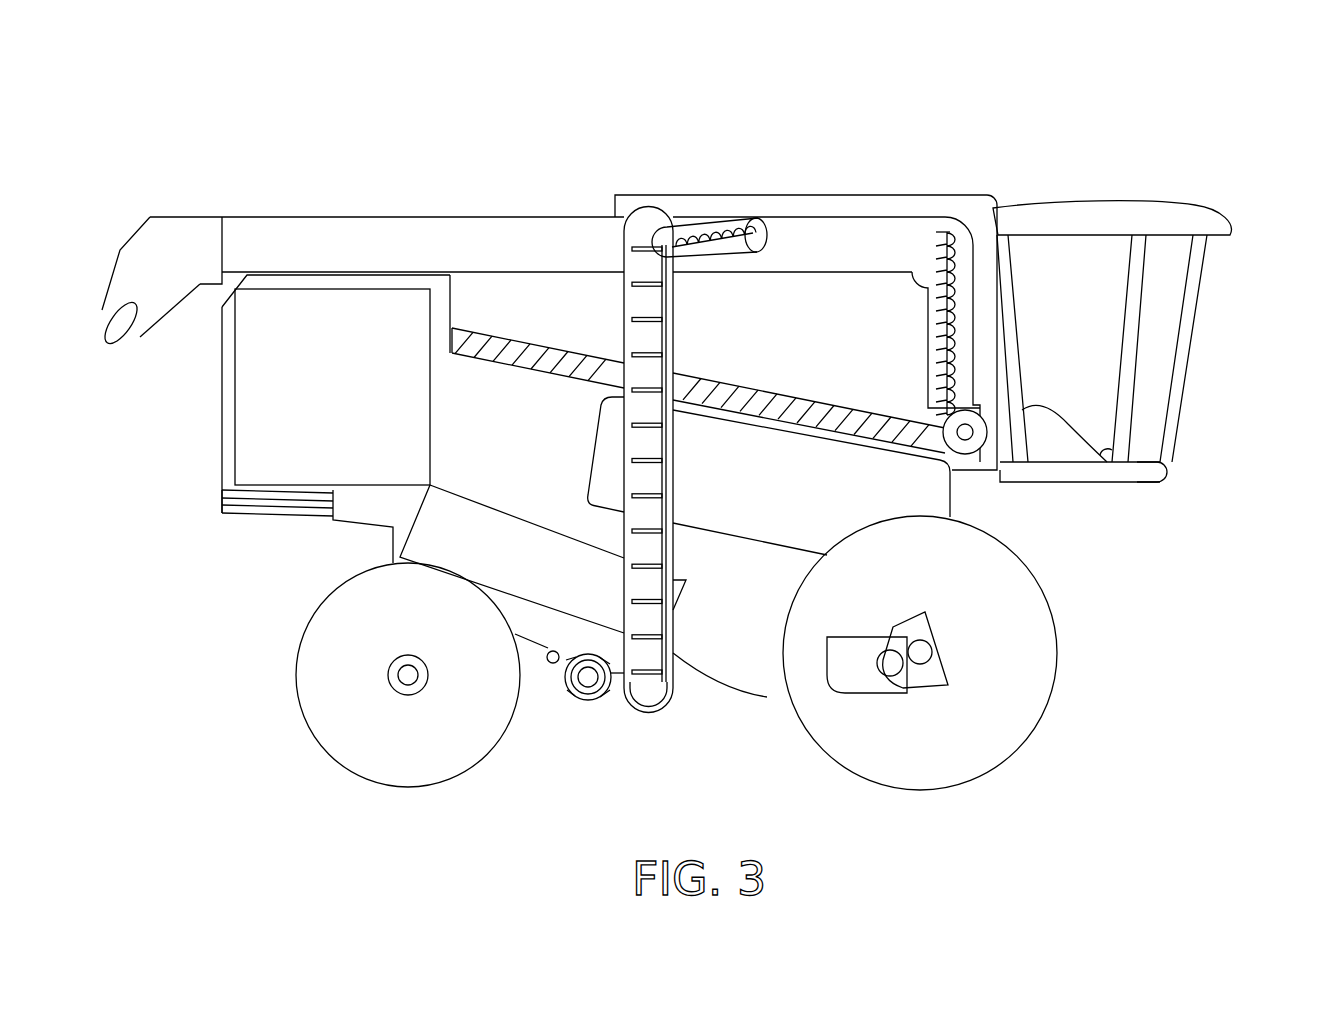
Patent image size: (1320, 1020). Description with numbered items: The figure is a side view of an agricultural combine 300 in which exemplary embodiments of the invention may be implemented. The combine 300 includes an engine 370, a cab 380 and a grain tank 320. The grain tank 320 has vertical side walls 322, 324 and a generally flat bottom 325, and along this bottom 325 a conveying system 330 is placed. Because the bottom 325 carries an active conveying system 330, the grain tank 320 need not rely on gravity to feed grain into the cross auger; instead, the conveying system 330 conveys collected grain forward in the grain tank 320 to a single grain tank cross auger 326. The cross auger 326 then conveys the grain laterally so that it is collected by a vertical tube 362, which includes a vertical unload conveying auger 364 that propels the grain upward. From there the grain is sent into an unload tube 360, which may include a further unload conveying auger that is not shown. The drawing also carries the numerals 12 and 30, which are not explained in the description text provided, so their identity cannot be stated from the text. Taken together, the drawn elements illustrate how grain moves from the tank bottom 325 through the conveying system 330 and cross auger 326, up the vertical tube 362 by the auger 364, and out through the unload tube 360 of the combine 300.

The agricultural combine 300 is at (1043, 757).
The combine body / grain tank 12 is at (760, 522).
The feeder housing 30 is at (435, 537).
The unload tube 360 is at (278, 228).
The engine 370 is at (280, 369).
The vertical side wall 322 is at (450, 300).
The conveying system 330 is at (492, 323).
The bottom 325 is at (480, 360).
The grain tank 320 is at (807, 300).
The vertical tube 362 is at (975, 277).
The vertical unload conveying auger 364 is at (945, 218).
The grain tank cross auger 326 is at (972, 457).
The vertical side wall 324 is at (1000, 297).
The cab 380 is at (1147, 480).